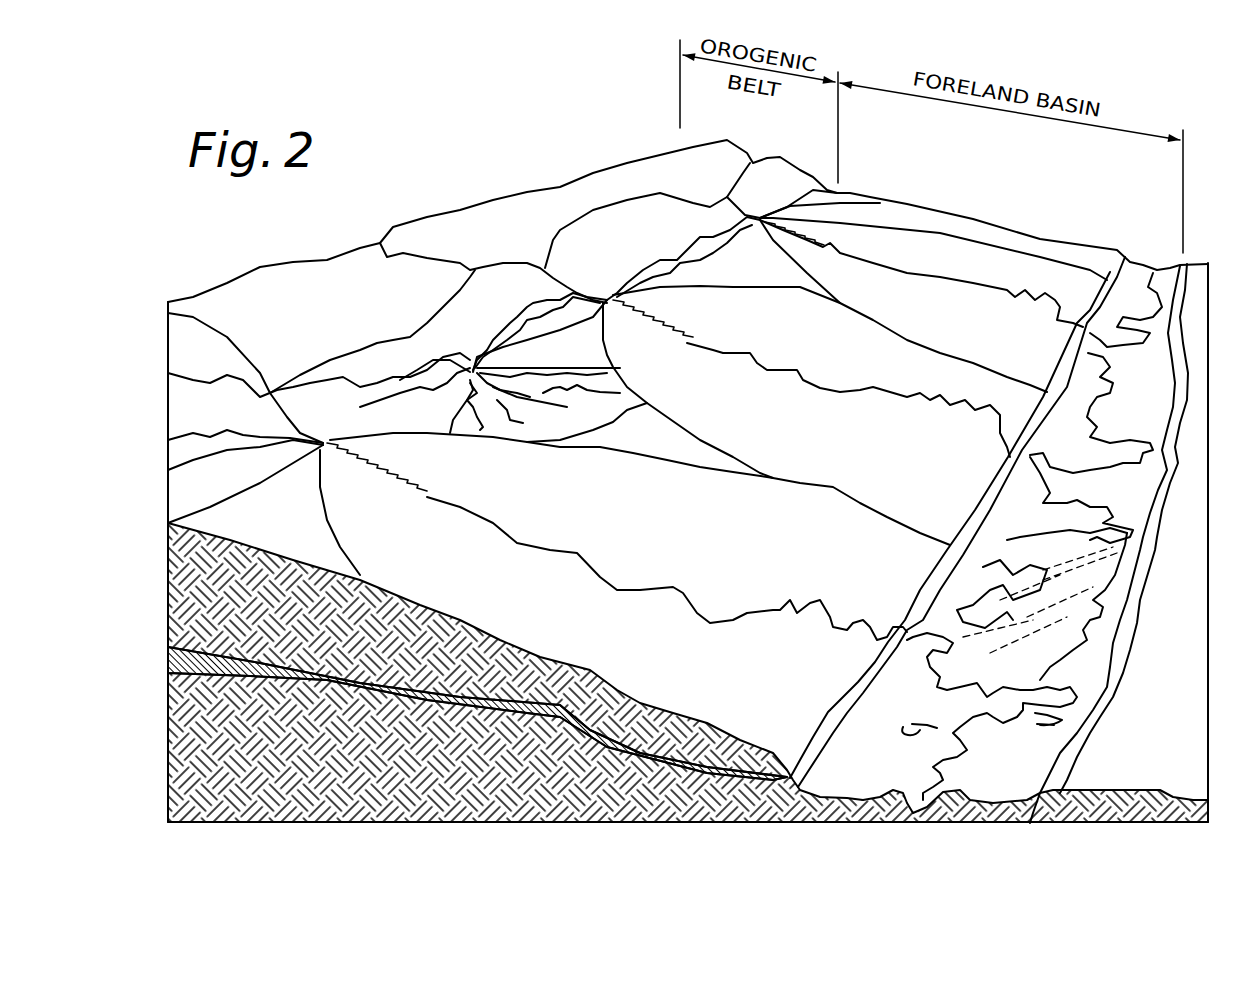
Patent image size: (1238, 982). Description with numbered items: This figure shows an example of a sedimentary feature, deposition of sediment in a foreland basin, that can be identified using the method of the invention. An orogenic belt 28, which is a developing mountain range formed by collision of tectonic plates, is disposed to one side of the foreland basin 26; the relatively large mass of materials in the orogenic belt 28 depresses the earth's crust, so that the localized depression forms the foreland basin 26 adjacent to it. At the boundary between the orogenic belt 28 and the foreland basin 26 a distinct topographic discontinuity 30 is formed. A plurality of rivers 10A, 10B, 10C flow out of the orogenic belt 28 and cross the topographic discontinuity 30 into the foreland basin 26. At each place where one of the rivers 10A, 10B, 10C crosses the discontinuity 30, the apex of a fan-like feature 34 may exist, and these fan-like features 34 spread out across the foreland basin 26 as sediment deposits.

The river 10A is at (327, 440).
The river 10B is at (613, 297).
The river 10C is at (762, 220).
The foreland basin 26 is at (1021, 186).
The orogenic belt 28 is at (748, 140).
The topographic discontinuity 30 is at (850, 193).
The fan-like feature 34 is at (726, 550).